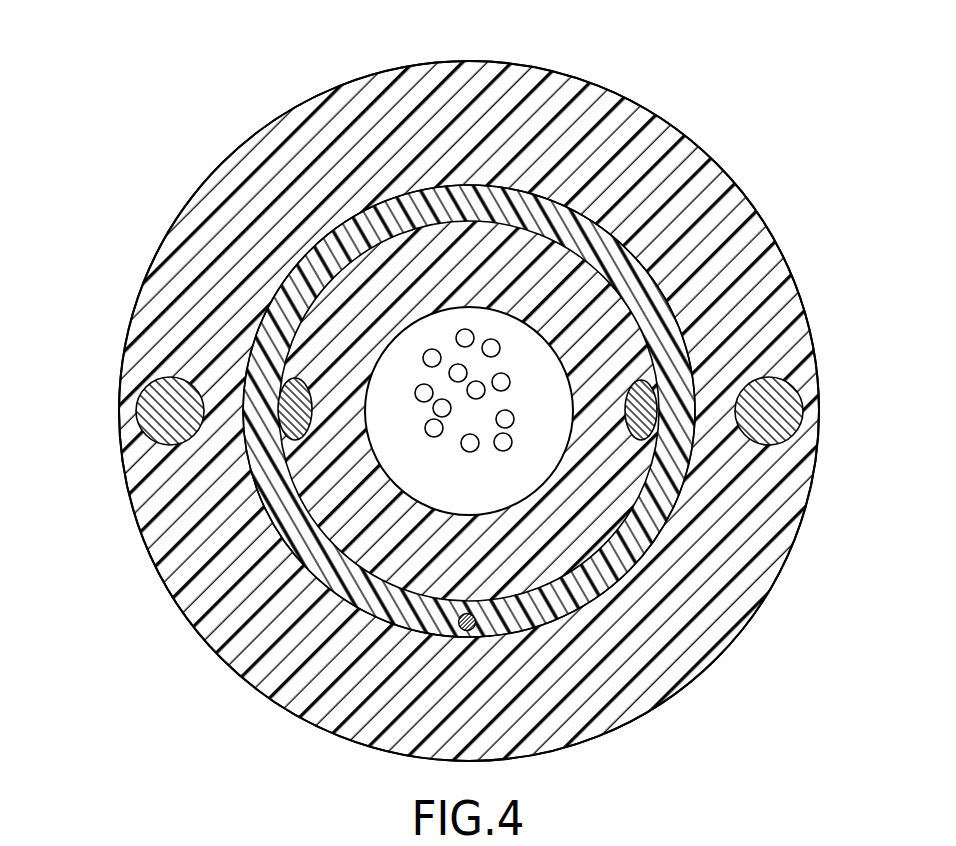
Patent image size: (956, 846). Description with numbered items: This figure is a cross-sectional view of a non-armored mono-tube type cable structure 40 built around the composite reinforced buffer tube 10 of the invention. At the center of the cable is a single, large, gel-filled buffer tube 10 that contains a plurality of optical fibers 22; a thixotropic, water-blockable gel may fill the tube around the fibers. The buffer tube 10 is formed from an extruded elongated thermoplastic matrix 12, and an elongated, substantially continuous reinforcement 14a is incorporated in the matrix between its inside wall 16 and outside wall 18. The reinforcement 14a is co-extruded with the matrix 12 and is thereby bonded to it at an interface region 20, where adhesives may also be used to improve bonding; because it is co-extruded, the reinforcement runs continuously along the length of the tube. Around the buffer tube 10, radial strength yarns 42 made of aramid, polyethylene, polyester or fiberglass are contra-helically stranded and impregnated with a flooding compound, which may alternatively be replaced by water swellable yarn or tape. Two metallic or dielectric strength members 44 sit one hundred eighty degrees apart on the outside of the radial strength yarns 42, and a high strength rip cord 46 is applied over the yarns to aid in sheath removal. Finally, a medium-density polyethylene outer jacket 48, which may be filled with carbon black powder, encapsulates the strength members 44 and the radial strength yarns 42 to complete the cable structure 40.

The non-armored mono-tube type cable structure 40 is at (246, 60).
The thermoplastic matrix 12 is at (455, 225).
The buffer tube 10 is at (296, 266).
The outside wall 18 is at (695, 240).
The outer jacket 48 is at (788, 292).
The strength members 44 is at (150, 428).
The reinforcement 14a is at (290, 432).
The interface region 20 is at (313, 418).
The radial strength yarns 42 is at (405, 622).
The rip cord 46 is at (477, 627).
The inside wall 16 is at (567, 365).
The optical fibers 22 is at (467, 447).